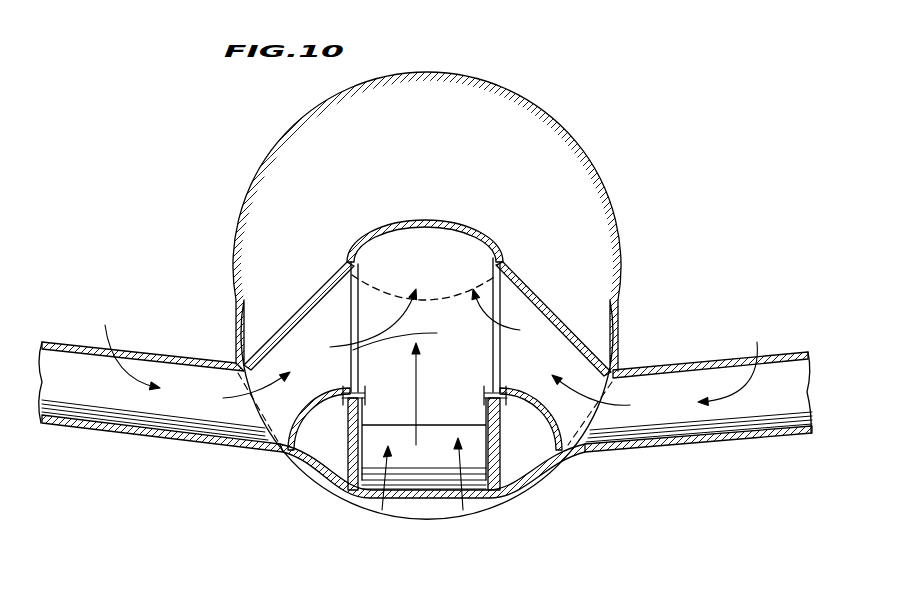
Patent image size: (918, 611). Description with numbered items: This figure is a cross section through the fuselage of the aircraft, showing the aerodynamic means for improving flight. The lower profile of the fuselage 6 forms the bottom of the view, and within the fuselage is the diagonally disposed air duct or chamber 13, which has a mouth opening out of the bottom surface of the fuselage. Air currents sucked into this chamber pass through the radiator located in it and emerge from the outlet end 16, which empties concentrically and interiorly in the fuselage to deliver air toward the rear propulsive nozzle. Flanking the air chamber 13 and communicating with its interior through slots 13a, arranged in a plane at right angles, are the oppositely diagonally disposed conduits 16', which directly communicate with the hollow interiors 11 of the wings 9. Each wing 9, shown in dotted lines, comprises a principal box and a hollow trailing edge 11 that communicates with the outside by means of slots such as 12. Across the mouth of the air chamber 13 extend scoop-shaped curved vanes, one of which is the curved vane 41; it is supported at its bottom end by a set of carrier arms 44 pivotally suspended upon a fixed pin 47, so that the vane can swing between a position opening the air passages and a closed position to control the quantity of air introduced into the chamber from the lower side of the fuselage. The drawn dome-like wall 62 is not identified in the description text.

The lower profile of the fuselage 6 is at (543, 479).
The wing 9 is at (183, 443).
The hollow trailing edge 11 is at (99, 407).
The slots 12 is at (163, 358).
The air duct or chamber 13 is at (345, 487).
The slots 13a is at (494, 338).
The outlet end 16 is at (425, 227).
The conduits 16' is at (427, 307).
The curved vane 41 is at (432, 482).
The carrier arms 44 is at (363, 403).
The fixed pin 47 is at (425, 419).
The dome 62 is at (579, 160).